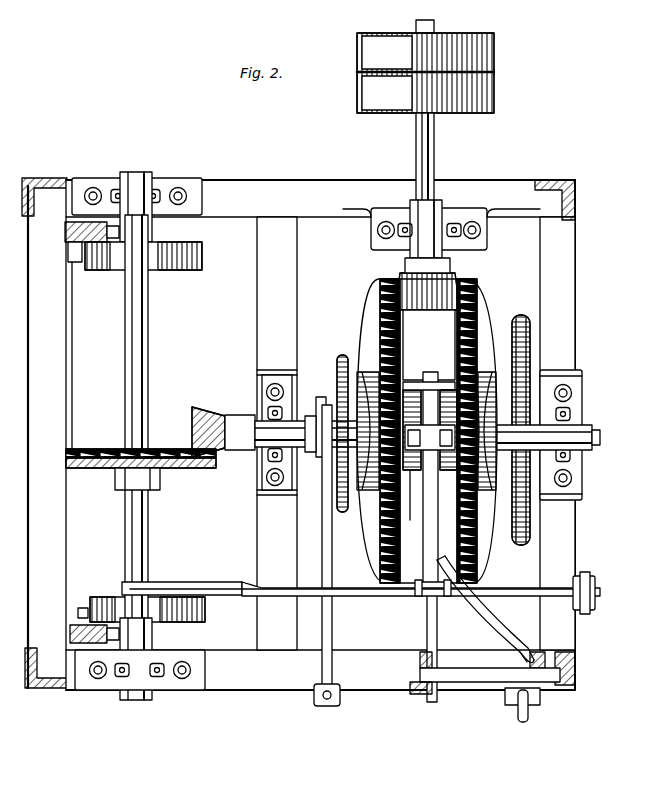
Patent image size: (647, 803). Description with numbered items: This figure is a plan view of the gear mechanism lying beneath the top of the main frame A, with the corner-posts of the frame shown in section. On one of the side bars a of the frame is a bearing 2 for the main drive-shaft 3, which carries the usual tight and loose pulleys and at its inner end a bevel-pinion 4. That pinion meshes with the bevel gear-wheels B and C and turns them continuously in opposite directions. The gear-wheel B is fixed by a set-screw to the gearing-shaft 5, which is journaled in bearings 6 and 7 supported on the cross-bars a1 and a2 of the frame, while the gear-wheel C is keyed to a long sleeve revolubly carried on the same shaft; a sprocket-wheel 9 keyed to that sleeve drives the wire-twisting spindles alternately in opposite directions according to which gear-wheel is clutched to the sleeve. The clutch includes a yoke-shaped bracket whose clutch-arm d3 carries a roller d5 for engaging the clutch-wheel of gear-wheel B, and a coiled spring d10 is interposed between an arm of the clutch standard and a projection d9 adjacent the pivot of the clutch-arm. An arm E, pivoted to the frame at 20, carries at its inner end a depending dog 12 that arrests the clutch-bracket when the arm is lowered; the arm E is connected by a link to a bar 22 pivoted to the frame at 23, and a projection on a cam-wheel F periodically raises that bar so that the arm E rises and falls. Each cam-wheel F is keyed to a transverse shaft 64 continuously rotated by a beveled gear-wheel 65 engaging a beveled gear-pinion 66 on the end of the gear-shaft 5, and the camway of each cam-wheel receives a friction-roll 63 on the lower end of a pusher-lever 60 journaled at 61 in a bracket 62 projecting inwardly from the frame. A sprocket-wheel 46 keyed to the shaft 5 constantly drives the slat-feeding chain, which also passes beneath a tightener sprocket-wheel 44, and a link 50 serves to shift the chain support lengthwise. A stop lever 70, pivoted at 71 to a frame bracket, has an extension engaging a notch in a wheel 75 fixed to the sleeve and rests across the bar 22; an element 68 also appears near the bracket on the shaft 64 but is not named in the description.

The main frame A is at (30, 390).
The side bar a is at (320, 435).
The cross-bar a1 is at (555, 415).
The cross-bar a2 is at (277, 433).
The bearing 2 is at (470, 248).
The main drive-shaft 3 is at (436, 155).
The bevel-pinion 4 is at (400, 272).
The gearing-shaft 5 is at (601, 436).
The bearing 6 is at (580, 404).
The bearing 7 is at (262, 402).
The sprocket-wheel 9 is at (342, 514).
The depending dog 12 is at (432, 440).
The pivot of arm E 20 is at (420, 672).
The bar 22 is at (214, 582).
The pivot of bar 22 23 is at (597, 592).
The tightener sprocket-wheel 44 is at (530, 714).
The sprocket-wheel 46 is at (525, 322).
The link 50 is at (70, 233).
The pusher-lever 60 is at (68, 634).
The journal of pusher-lever 61 is at (76, 270).
The bracket 62 is at (74, 262).
The friction-roll 63 is at (120, 240).
The transverse shaft 64 is at (143, 365).
The beveled gear-wheel 65 is at (157, 449).
The beveled gear-pinion 66 is at (206, 408).
The set screw 68 is at (84, 607).
The lever 70 is at (334, 630).
The pivot of lever 70 71 is at (342, 700).
The wheel 75 is at (321, 396).
The bevel gear-wheel B is at (490, 322).
The bevel gear-wheel C is at (416, 431).
The latch-arm E is at (488, 620).
The cam-wheel F is at (211, 615).
The clutch-arm d3 is at (413, 508).
The roller d5 is at (472, 380).
The projection d9 is at (410, 388).
The coiled spring d10 is at (440, 388).